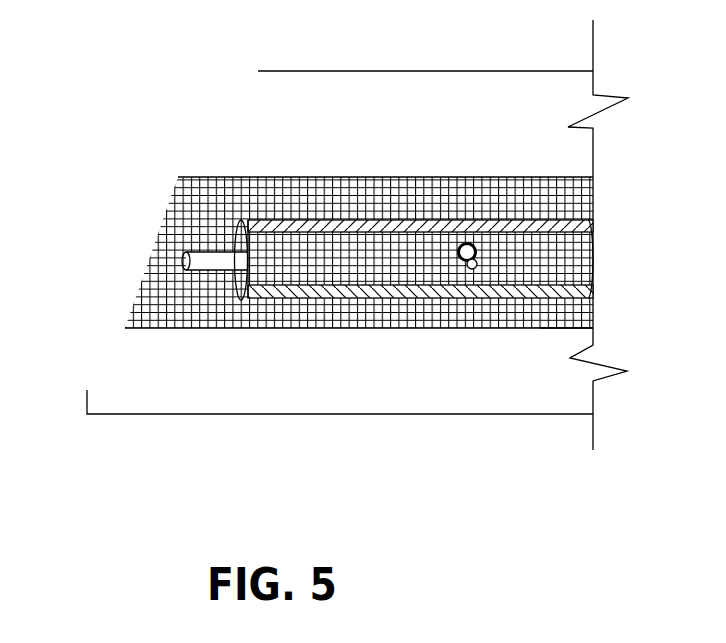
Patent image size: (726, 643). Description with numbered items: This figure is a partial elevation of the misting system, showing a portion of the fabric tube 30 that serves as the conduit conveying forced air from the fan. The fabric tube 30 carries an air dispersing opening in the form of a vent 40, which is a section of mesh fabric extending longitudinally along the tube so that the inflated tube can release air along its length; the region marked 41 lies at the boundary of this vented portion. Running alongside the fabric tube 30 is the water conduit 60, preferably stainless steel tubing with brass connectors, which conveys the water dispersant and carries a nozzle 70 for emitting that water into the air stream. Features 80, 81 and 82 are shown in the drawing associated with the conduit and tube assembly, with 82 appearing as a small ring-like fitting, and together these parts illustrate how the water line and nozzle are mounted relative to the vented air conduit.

The fabric tube 30 is at (508, 379).
The vent 40 is at (306, 352).
The surface of substrate layer 41 is at (580, 301).
The water conduit 60 is at (205, 272).
The nozzle 70 is at (463, 287).
The insulation mesh 80 is at (218, 245).
The insulation core 81 is at (568, 253).
The ring 82 is at (467, 243).